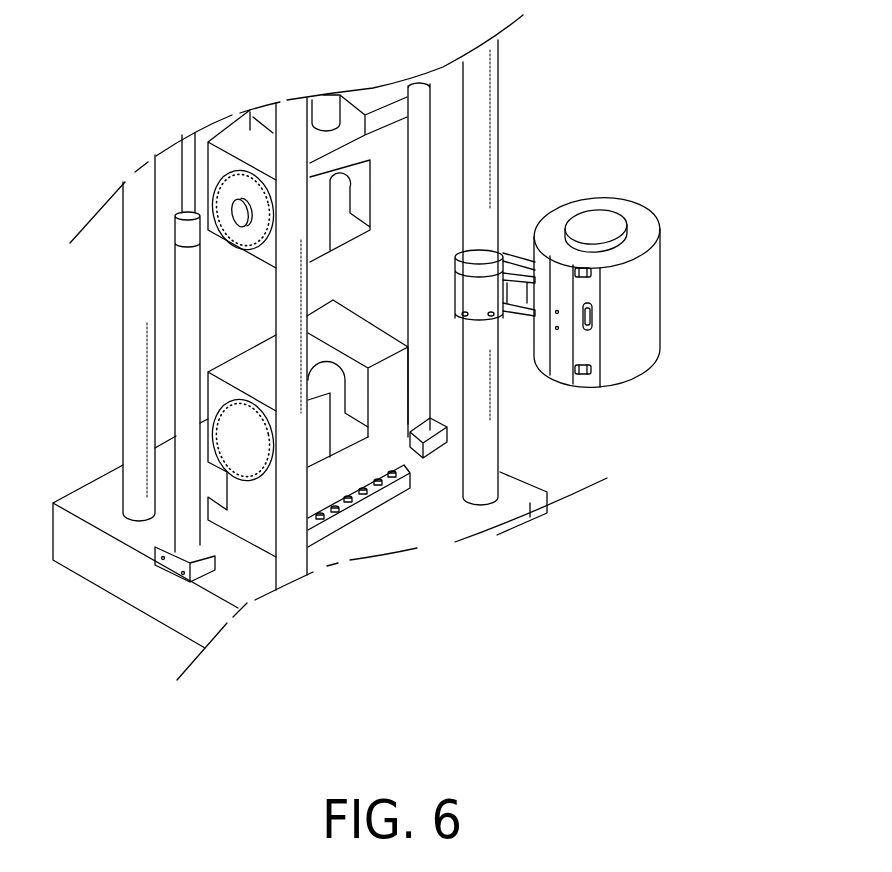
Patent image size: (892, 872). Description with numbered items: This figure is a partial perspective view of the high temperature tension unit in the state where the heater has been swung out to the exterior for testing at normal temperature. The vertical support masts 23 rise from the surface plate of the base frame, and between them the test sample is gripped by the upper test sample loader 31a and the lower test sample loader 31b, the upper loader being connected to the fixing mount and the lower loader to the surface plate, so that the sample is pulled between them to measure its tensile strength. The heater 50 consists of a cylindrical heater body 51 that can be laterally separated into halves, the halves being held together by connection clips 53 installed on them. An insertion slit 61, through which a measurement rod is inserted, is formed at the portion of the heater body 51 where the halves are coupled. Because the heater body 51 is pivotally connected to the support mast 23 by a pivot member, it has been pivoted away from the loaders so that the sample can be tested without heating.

The support mast 23 is at (485, 80).
The upper test sample loader 31a is at (408, 115).
The lower test sample loader 31b is at (378, 420).
The heater 50 is at (667, 208).
The heater body 51 is at (643, 300).
The connection clip 53 is at (590, 268).
The insertion slit 61 is at (573, 338).